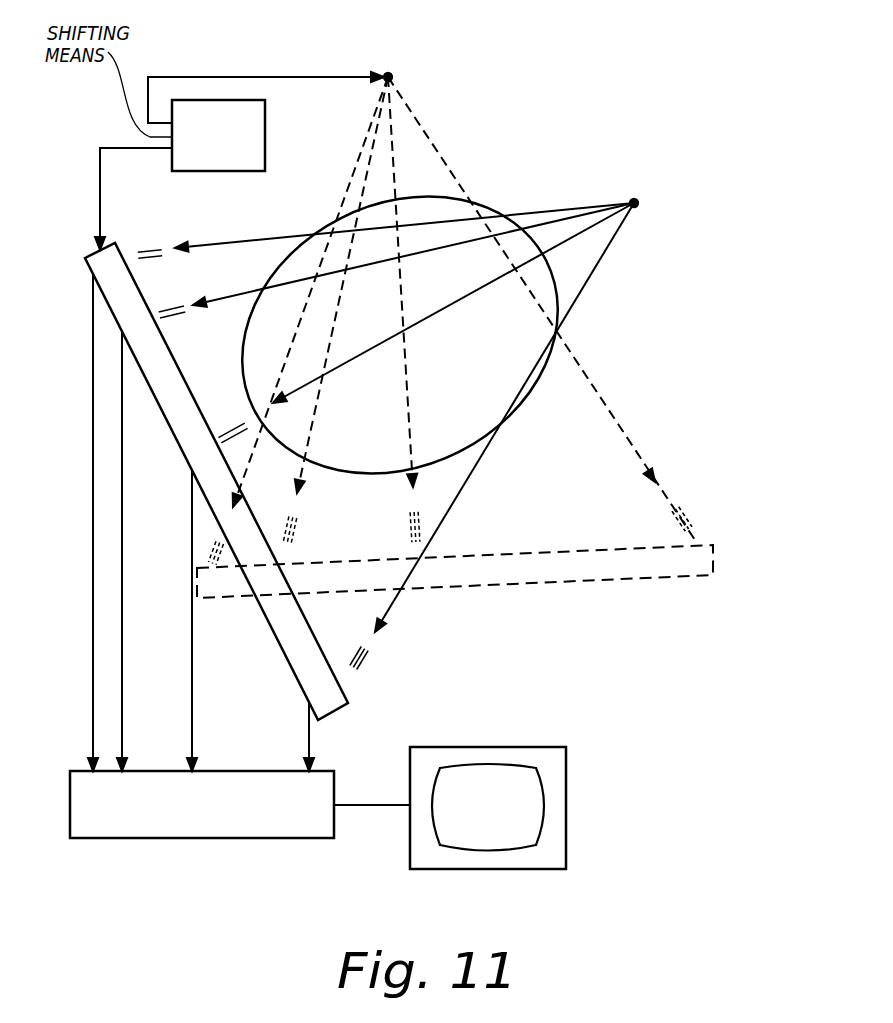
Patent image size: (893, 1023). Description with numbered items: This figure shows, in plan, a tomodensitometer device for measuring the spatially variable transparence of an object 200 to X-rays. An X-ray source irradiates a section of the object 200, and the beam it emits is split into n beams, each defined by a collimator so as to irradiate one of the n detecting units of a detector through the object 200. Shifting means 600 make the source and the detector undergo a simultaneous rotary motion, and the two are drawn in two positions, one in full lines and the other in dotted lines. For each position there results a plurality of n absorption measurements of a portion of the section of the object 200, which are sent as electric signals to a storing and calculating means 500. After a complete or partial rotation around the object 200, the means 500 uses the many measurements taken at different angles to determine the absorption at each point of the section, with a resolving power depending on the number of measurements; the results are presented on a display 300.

The object 200 is at (502, 382).
The display monitor 300 is at (410, 852).
The storing and calculating means 500 is at (118, 838).
The shifting means 600 is at (265, 127).